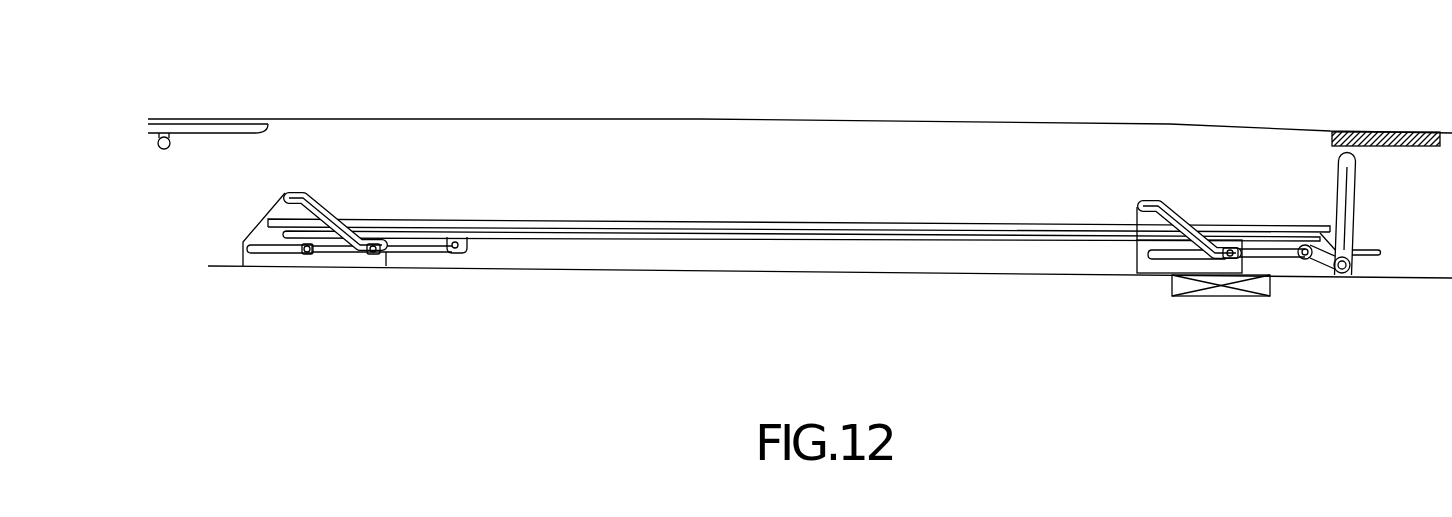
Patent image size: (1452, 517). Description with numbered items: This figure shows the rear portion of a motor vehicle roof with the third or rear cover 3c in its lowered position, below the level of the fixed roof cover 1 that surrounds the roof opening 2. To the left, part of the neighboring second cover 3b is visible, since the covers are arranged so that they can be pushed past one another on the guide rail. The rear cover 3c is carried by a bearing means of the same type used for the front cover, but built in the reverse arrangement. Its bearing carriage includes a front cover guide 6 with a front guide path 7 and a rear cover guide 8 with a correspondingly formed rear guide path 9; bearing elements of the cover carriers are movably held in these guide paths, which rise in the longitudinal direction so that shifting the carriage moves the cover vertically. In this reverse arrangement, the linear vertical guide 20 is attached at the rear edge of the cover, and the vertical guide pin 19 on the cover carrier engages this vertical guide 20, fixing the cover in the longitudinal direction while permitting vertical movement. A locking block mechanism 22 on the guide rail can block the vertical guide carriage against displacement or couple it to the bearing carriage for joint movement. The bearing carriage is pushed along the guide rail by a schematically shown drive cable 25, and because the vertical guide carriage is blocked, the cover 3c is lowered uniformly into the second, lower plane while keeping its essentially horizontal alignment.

The fixed roof cover 1 is at (1388, 128).
The roof opening 2 is at (549, 140).
The second cover 3b is at (205, 118).
The third cover 3c is at (768, 216).
The front cover guide 6 is at (1213, 268).
The front guide path 7 is at (1183, 207).
The rear cover guide 8 is at (337, 263).
The rear guide path 9 is at (327, 200).
The vertical guide pin 19 is at (1337, 274).
The vertical guide 20 is at (1348, 203).
The locking block mechanism 22 is at (1253, 292).
The drive cable 25 is at (1372, 256).